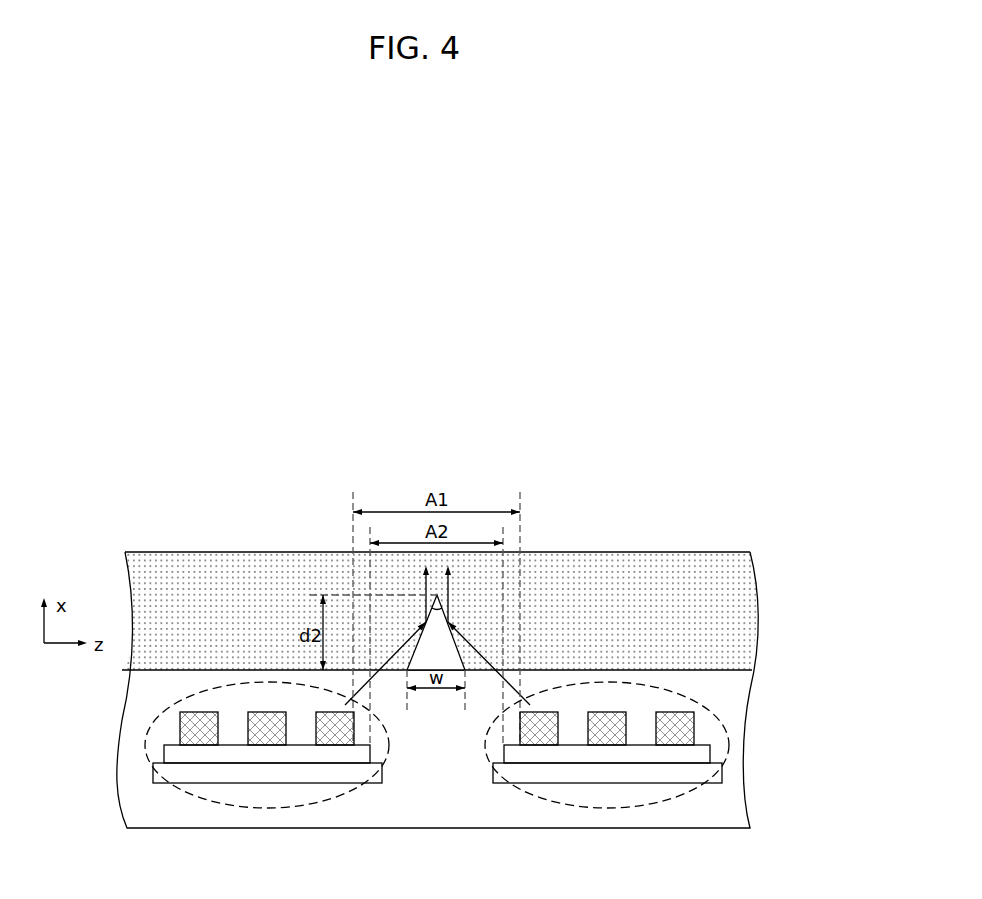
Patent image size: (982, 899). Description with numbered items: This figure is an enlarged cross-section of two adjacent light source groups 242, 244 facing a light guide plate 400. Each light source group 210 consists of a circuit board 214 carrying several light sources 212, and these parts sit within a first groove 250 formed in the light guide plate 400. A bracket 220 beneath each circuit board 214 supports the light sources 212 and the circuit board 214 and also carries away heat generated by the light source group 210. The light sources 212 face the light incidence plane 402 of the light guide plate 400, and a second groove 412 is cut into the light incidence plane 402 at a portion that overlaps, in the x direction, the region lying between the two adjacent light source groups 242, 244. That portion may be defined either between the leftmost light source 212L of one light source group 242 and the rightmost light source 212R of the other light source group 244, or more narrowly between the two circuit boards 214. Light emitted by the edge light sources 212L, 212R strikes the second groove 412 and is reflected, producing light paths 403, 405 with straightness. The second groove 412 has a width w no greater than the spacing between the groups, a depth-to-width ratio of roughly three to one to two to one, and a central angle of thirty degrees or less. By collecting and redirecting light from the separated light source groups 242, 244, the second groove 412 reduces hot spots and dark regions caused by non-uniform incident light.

The light guide plate 400 is at (755, 620).
The light incidence plane 402 is at (745, 664).
The light path 403 is at (450, 592).
The light path 405 is at (424, 592).
The second groove 412 is at (462, 652).
The light source group 210 is at (688, 800).
The light source 212 is at (662, 800).
The rightmost light source 212R is at (336, 740).
The leftmost light source 212L is at (543, 740).
The circuit board 214 is at (705, 752).
The bracket 220 is at (715, 772).
The light source group 242 is at (640, 806).
The light source group 244 is at (299, 806).
The first groove 250 is at (740, 808).